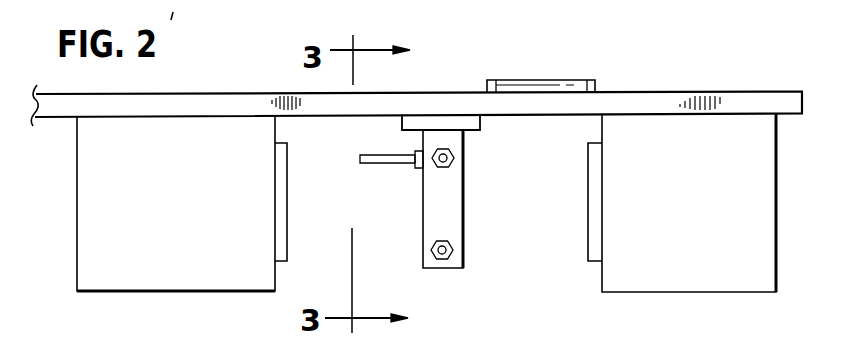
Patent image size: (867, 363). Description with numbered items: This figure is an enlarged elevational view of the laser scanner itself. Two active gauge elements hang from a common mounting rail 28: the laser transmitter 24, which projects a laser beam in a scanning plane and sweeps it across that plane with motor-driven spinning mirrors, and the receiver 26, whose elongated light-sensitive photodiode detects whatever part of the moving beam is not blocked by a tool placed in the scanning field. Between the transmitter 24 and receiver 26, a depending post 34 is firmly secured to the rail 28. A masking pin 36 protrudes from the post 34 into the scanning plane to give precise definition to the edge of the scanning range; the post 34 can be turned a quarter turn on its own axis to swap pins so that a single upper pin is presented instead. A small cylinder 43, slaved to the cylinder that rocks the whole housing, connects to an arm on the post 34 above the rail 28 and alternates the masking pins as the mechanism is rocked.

The laser transmitter 24 is at (183, 200).
The receiver 26 is at (698, 213).
The mounting rail 28 is at (528, 100).
The depending post 34 is at (453, 208).
The masking pin 36 is at (386, 163).
The small cylinder 43 is at (518, 80).